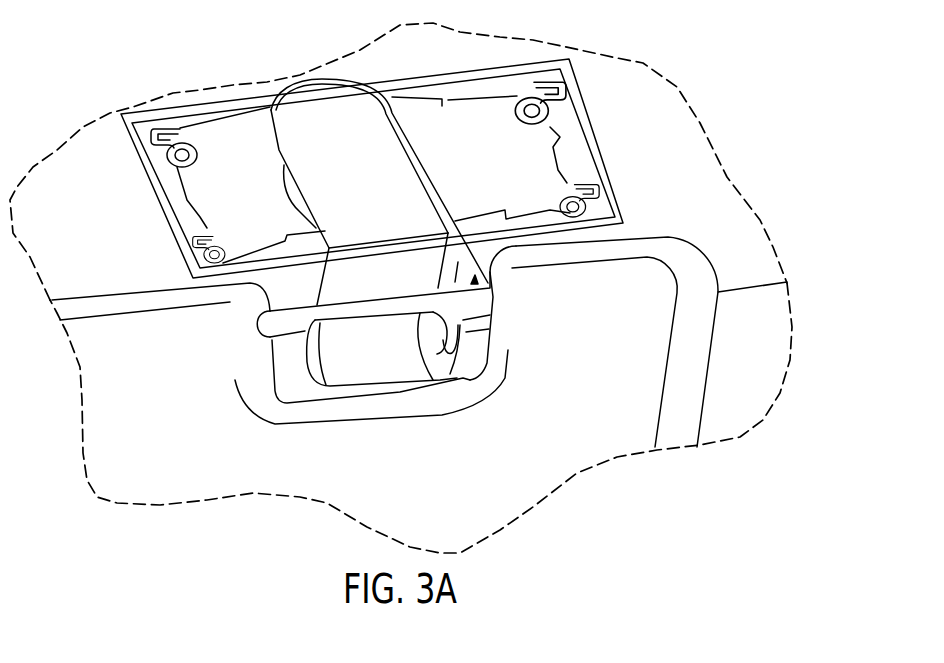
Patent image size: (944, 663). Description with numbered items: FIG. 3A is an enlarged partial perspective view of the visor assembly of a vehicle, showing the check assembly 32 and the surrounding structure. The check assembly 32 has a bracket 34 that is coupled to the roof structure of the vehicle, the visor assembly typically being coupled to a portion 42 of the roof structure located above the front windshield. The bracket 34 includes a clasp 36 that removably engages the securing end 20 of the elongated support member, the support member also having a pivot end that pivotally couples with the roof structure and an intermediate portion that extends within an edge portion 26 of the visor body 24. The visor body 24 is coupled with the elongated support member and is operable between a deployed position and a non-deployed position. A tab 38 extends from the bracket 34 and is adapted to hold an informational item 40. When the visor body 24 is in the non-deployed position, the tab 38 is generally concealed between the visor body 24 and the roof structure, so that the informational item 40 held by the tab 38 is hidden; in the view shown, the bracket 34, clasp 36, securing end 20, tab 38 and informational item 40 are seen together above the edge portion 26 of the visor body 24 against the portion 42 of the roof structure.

The securing end 20 is at (257, 325).
The visor body 24 is at (147, 440).
The edge portion 26 is at (133, 302).
The check assembly 32 is at (458, 187).
The bracket 34 is at (497, 255).
The clasp 36 is at (383, 313).
The tab 38 is at (297, 112).
The informational item 40 is at (177, 196).
The portion of the roof structure 42 is at (80, 177).